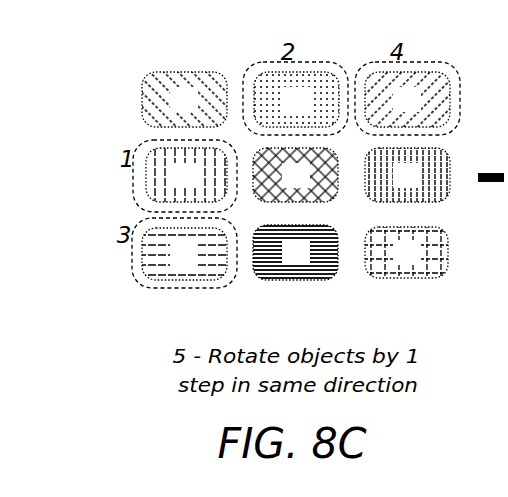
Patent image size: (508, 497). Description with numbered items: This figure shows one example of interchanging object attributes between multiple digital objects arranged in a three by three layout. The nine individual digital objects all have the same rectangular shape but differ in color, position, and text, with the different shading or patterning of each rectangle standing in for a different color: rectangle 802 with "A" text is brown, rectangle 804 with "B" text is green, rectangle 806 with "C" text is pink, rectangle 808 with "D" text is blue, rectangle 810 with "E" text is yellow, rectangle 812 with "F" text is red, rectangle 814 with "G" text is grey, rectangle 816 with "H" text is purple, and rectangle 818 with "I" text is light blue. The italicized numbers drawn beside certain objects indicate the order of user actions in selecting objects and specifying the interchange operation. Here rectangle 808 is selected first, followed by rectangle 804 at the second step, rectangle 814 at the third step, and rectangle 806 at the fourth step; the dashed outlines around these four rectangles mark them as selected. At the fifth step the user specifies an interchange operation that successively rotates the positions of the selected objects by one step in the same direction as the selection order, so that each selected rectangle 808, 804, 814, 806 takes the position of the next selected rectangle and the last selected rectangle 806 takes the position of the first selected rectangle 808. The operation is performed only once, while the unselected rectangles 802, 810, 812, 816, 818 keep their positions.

The rectangle 802 is at (153, 78).
The rectangle 804 is at (263, 72).
The rectangle 806 is at (375, 72).
The rectangle 808 is at (148, 155).
The rectangle 810 is at (268, 198).
The rectangle 812 is at (443, 153).
The rectangle 814 is at (150, 272).
The rectangle 816 is at (338, 248).
The rectangle 818 is at (447, 237).